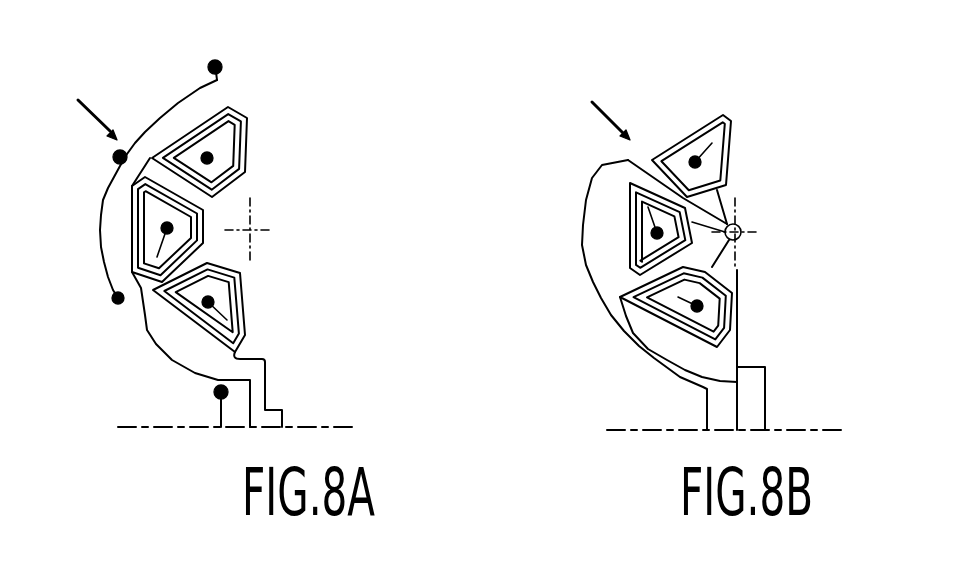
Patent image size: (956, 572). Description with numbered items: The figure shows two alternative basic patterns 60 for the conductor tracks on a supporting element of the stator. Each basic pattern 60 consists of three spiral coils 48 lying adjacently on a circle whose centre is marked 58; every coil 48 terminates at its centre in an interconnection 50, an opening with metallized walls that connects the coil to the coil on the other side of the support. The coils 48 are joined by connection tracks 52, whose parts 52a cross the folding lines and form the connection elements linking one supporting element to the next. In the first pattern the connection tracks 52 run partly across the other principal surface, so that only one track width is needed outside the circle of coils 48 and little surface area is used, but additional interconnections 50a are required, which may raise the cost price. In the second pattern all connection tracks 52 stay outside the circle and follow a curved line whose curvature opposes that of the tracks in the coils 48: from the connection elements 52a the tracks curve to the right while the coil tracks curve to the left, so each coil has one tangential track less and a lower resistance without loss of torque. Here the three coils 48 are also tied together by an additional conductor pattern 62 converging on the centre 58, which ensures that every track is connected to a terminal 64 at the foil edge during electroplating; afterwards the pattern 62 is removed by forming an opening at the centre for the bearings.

In FIG. 8A, the second coil 48 is at (244, 118).
In FIG. 8B, the second coil 48 is at (728, 115).
In FIG. 8A, the interconnection 50 is at (207, 158).
In FIG. 8B, the interconnection 50 is at (695, 162).
In FIG. 8A, the additional interconnection 50a is at (219, 66).
In FIG. 8A, the connection track 52 is at (175, 98).
In FIG. 8B, the connection track 52 is at (630, 343).
In FIG. 8A, the connection element 52a is at (222, 407).
In FIG. 8B, the connection element 52a is at (740, 395).
In FIG. 8A, the centre of the circle of coils 58 is at (253, 228).
In FIG. 8B, the centre of the circle of coils 58 is at (740, 226).
In FIG. 8A, the basic pattern 60 is at (77, 106).
In FIG. 8B, the basic pattern 60 is at (591, 110).
In FIG. 8B, the additional conductor pattern 62 is at (748, 264).
In FIG. 8B, the terminal 64 is at (587, 198).